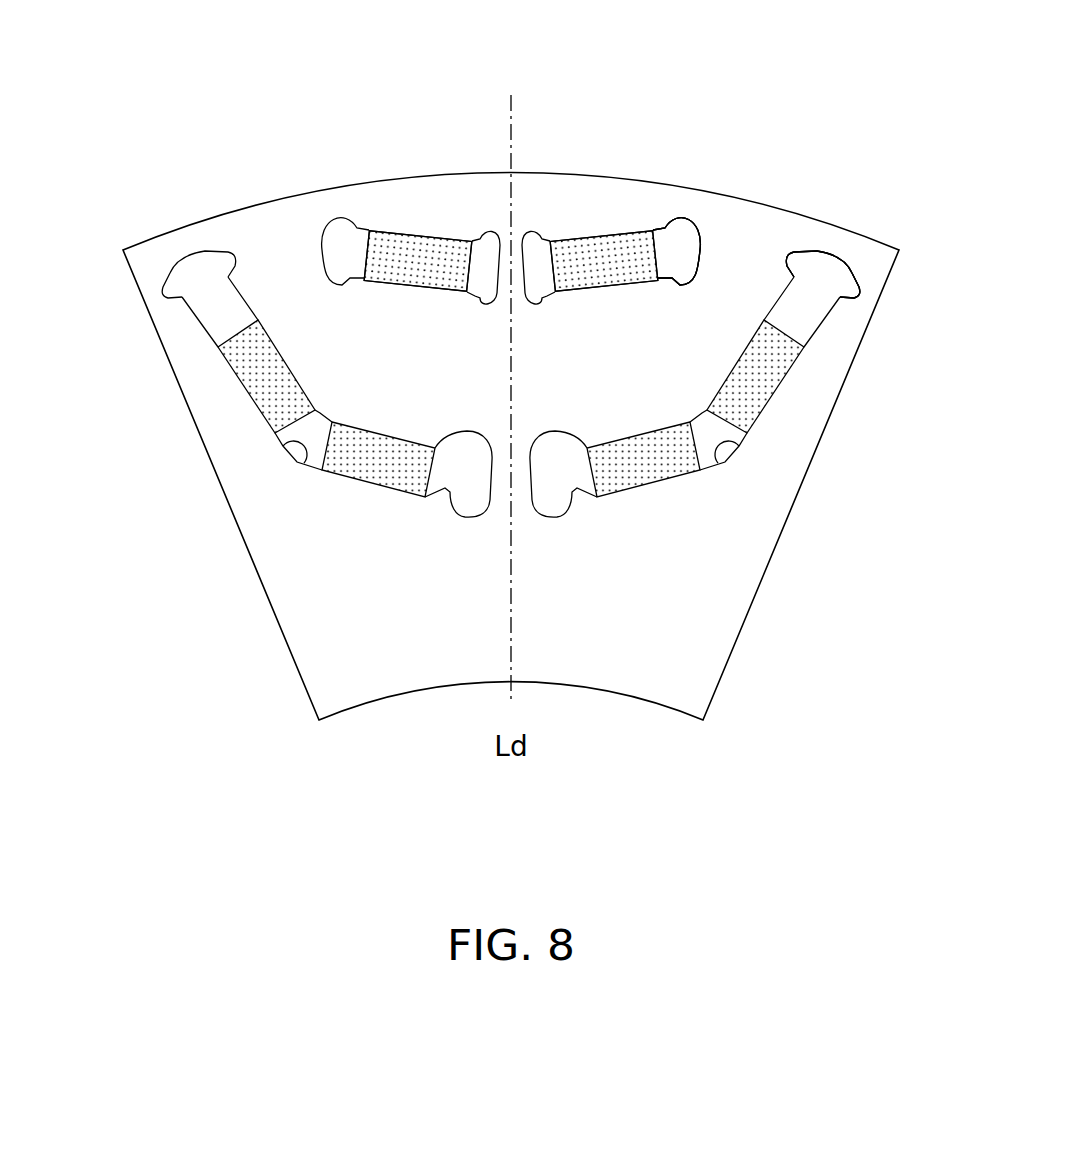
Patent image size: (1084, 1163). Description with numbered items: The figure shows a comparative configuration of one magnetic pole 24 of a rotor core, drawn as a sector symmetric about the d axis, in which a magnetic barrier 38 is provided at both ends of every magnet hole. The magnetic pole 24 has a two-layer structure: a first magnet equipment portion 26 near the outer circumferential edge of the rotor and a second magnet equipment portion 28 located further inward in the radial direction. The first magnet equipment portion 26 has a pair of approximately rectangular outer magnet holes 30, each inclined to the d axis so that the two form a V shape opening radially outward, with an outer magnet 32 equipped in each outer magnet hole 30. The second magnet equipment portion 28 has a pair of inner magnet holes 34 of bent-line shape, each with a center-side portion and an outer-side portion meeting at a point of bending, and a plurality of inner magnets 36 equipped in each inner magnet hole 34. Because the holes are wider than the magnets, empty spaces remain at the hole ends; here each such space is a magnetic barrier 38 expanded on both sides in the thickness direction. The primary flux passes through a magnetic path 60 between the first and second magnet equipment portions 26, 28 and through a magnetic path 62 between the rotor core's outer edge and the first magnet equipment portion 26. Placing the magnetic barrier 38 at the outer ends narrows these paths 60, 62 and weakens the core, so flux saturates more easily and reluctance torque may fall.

The magnetic pole 24 is at (778, 85).
The first magnet equipment portion 26 is at (711, 203).
The second magnet equipment portion 28 is at (836, 226).
The outer magnet hole 30 is at (404, 232).
The outer magnet 32 is at (403, 274).
The inner magnet hole 34 is at (302, 465).
The inner magnet 36 is at (258, 378).
The magnetic barrier 38 is at (165, 292).
The magnetic path 60 is at (532, 409).
The magnetic path 62 is at (536, 228).